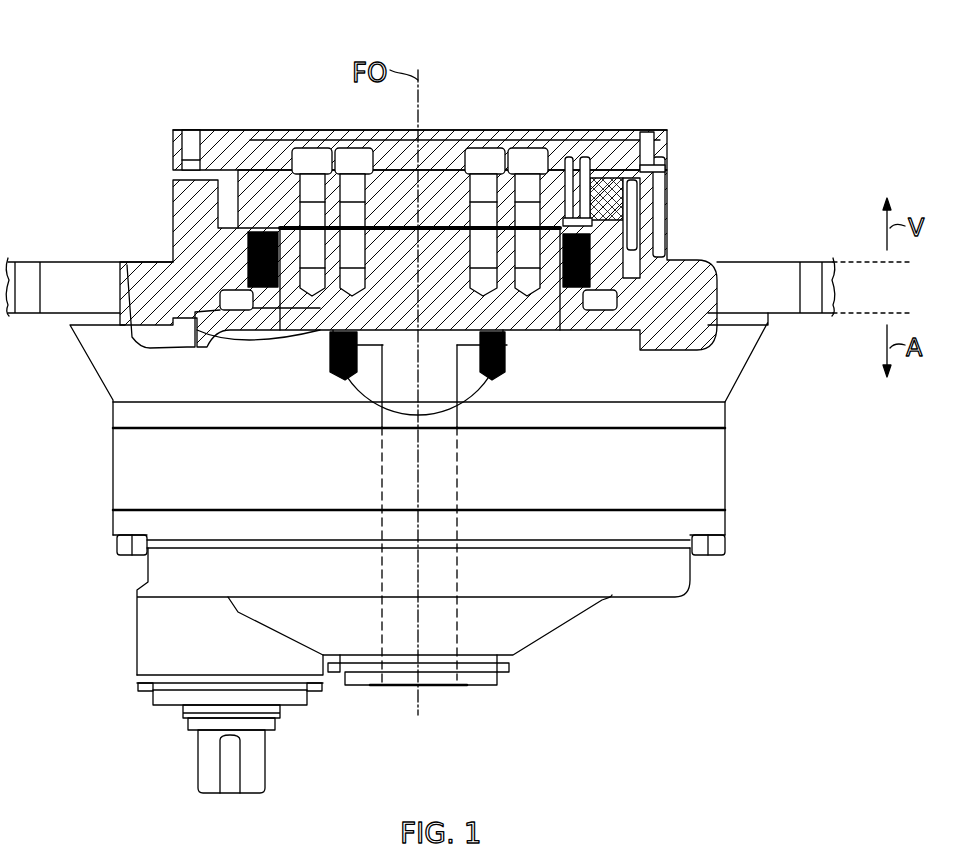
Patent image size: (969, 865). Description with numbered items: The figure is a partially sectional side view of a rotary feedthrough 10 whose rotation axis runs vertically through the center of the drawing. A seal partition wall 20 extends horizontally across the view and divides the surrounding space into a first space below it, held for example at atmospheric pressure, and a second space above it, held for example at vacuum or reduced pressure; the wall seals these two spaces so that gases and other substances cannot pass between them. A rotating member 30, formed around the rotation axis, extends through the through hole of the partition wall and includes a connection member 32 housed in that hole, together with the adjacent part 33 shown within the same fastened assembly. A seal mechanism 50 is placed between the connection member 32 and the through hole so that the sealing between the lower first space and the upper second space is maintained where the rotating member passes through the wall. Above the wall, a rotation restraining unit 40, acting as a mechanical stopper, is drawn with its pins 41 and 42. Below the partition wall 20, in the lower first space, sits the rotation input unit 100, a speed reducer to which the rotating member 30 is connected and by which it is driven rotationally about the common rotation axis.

The rotary feedthrough 10 is at (112, 82).
The seal partition wall 20 is at (787, 258).
The rotating member 30 is at (547, 58).
The connection member 32 is at (450, 262).
The holder / bearing housing 33 is at (453, 200).
The rotation restraining unit 40 is at (658, 58).
The positioning pin 41 is at (618, 170).
The positioning pin 42 is at (598, 170).
The seal mechanism 50 is at (577, 320).
The rotation input unit 100 is at (712, 465).